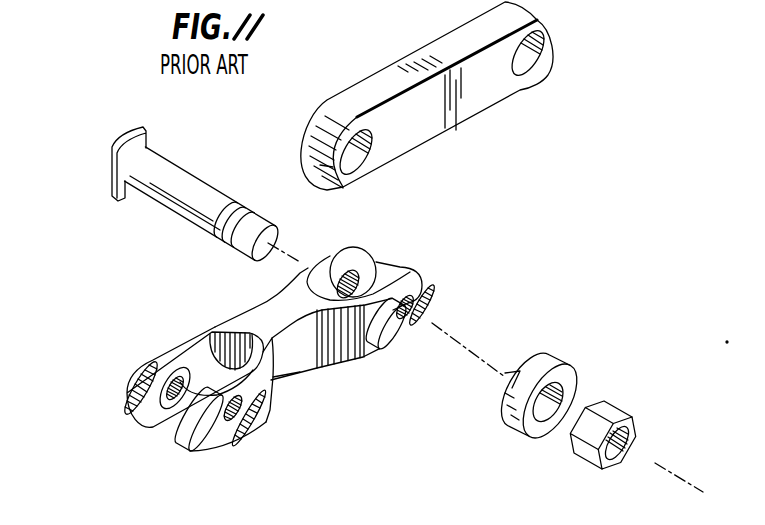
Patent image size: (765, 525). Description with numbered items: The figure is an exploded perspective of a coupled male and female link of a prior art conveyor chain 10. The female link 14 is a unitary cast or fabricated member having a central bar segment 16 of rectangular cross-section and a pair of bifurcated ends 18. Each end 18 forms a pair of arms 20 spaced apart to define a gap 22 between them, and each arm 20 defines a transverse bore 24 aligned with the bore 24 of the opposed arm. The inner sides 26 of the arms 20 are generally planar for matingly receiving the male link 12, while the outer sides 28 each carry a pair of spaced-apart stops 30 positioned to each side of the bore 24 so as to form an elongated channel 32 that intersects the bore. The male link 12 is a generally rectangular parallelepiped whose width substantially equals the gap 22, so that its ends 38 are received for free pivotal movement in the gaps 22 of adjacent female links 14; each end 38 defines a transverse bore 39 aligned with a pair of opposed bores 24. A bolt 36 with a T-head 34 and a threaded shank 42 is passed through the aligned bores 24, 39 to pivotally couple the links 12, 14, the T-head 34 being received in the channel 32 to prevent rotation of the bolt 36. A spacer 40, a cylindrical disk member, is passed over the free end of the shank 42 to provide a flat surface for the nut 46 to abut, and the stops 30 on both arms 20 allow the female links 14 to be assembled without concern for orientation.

The conveyor chain 10 is at (73, 100).
The male link 12 is at (481, 118).
The female link 14 is at (355, 372).
The central bar segment 16 is at (298, 373).
The bifurcated end 18 is at (407, 273).
The arm 20 is at (360, 252).
The gap 22 is at (400, 258).
The transverse bore 24 is at (335, 270).
The inner side 26 is at (300, 258).
The outer side 28 is at (272, 386).
The stop 30 is at (337, 247).
The elongated channel 32 is at (413, 345).
The T-head 34 is at (123, 134).
The bolt 36 is at (195, 172).
The end of male link 38 is at (323, 118).
The transverse bore 39 is at (357, 154).
The spacer 40 is at (548, 360).
The threaded shank 42 is at (160, 208).
The nut 46 is at (617, 407).